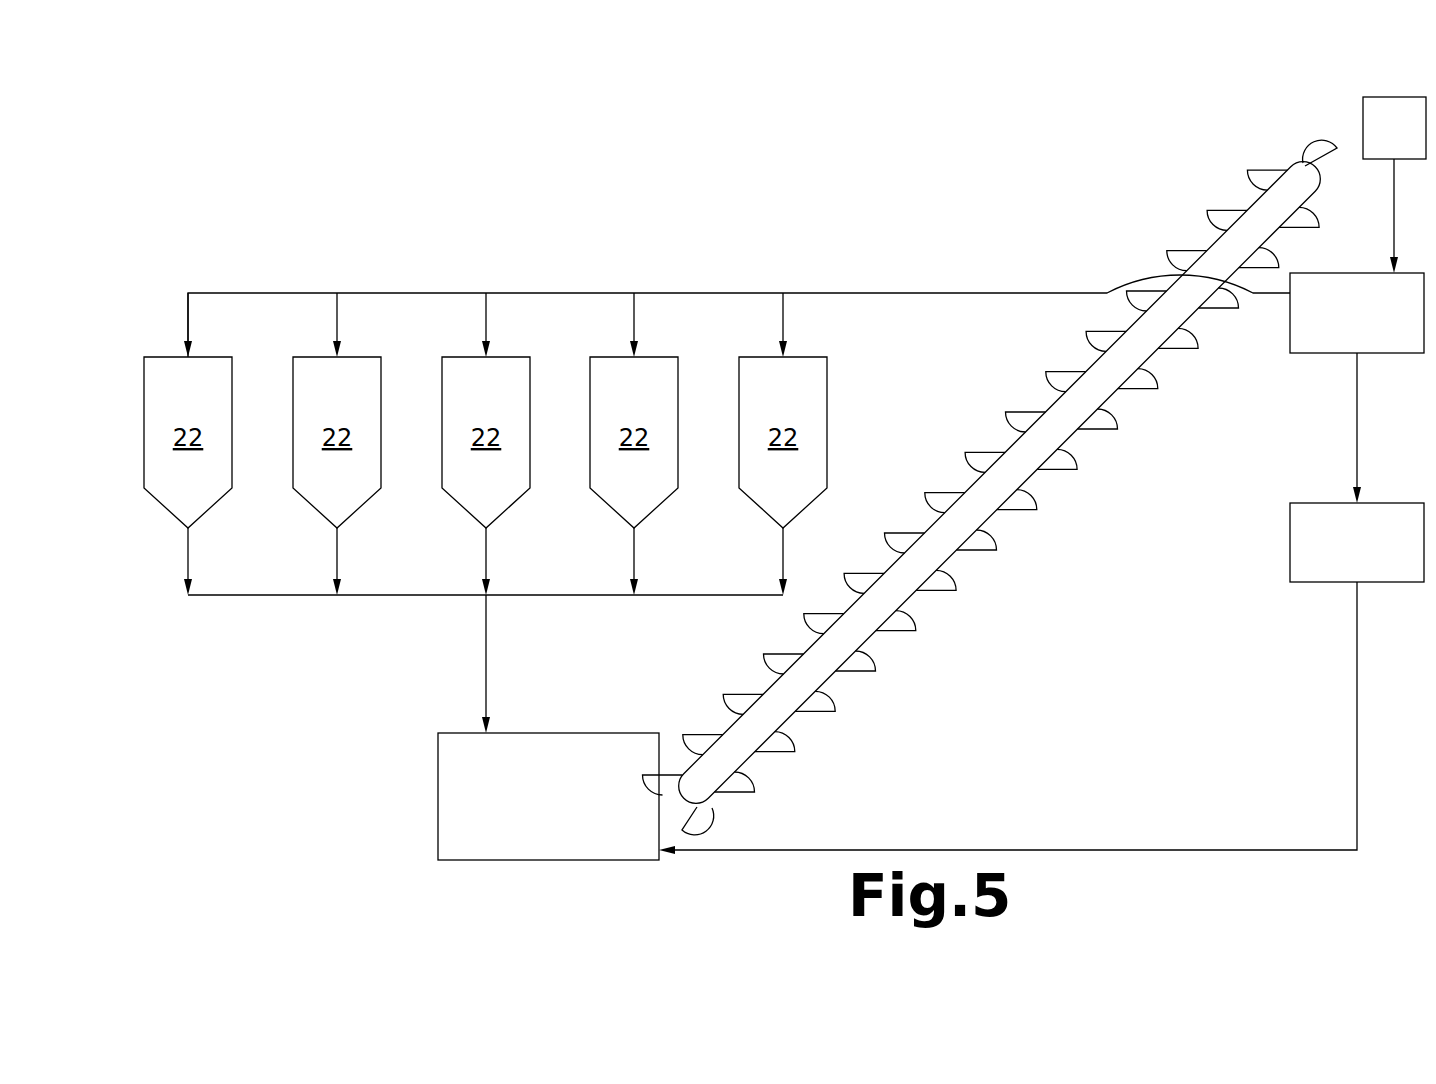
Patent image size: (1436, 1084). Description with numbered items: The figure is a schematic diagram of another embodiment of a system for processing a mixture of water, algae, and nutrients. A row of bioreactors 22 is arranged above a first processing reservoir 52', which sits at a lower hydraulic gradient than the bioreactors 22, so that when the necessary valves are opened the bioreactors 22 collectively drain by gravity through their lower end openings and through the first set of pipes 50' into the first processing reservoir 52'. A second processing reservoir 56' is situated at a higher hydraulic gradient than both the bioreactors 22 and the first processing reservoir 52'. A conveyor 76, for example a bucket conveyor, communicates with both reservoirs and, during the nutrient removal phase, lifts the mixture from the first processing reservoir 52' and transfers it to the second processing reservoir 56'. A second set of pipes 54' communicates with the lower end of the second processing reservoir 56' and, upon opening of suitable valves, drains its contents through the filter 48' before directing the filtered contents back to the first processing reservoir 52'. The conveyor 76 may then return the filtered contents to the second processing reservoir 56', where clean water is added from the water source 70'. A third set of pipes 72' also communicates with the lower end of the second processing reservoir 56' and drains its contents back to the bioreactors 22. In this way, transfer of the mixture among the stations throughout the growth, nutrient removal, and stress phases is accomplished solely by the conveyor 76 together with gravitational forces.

The bioreactors 22 is at (485, 444).
The third set of pipes 72' is at (739, 248).
The first set of pipes 50' is at (485, 675).
The first processing reservoir 52' is at (452, 796).
The water source 70' is at (1320, 178).
The second processing reservoir 56' is at (1304, 329).
The second set of pipes 54' is at (1010, 603).
The filter 48' is at (1275, 567).
The conveyor 76 is at (965, 560).